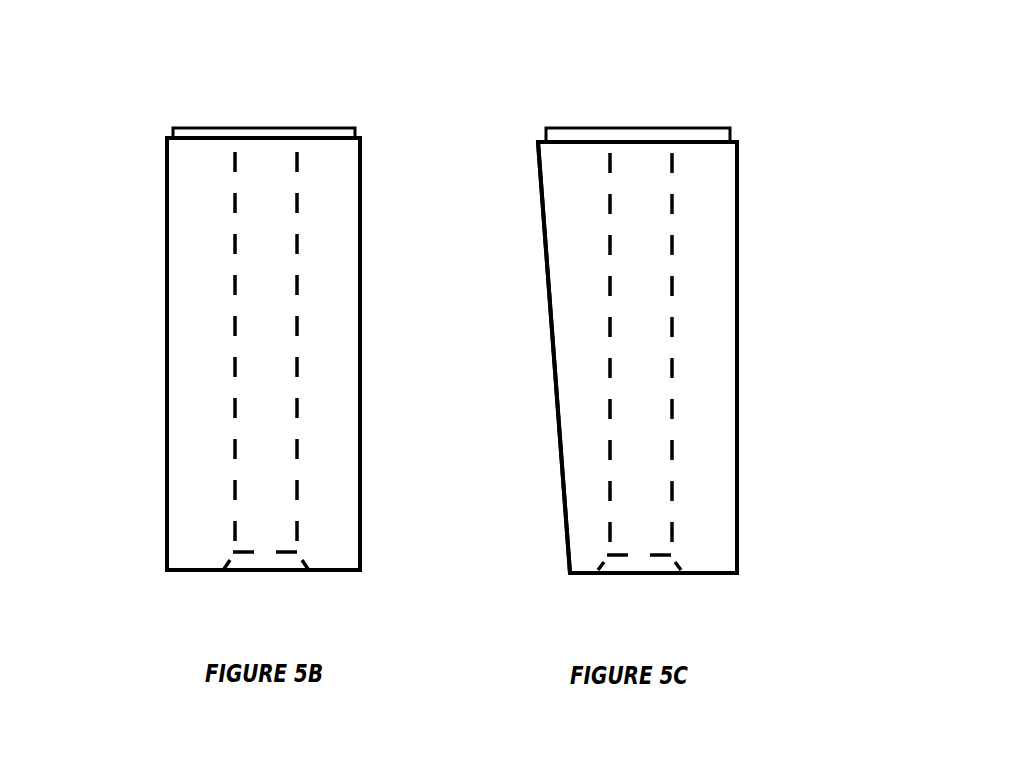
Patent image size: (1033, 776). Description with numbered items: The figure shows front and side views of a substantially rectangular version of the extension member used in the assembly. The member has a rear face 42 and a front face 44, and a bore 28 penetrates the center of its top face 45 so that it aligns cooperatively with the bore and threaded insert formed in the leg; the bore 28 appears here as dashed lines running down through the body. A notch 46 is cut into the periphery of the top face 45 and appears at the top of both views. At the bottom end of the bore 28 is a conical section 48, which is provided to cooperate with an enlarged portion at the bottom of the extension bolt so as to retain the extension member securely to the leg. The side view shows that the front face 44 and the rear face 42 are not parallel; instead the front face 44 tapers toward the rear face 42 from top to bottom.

In FIG. 5B, the bore 28 is at (274, 366).
In FIG. 5C, the rear face 42 is at (756, 398).
In FIG. 5C, the front face 44 is at (530, 284).
In FIG. 5B, the top face 45 is at (194, 115).
In FIG. 5B, the notch 46 is at (360, 131).
In FIG. 5C, the notch 46 is at (748, 128).
In FIG. 5B, the conical section 48 is at (318, 557).